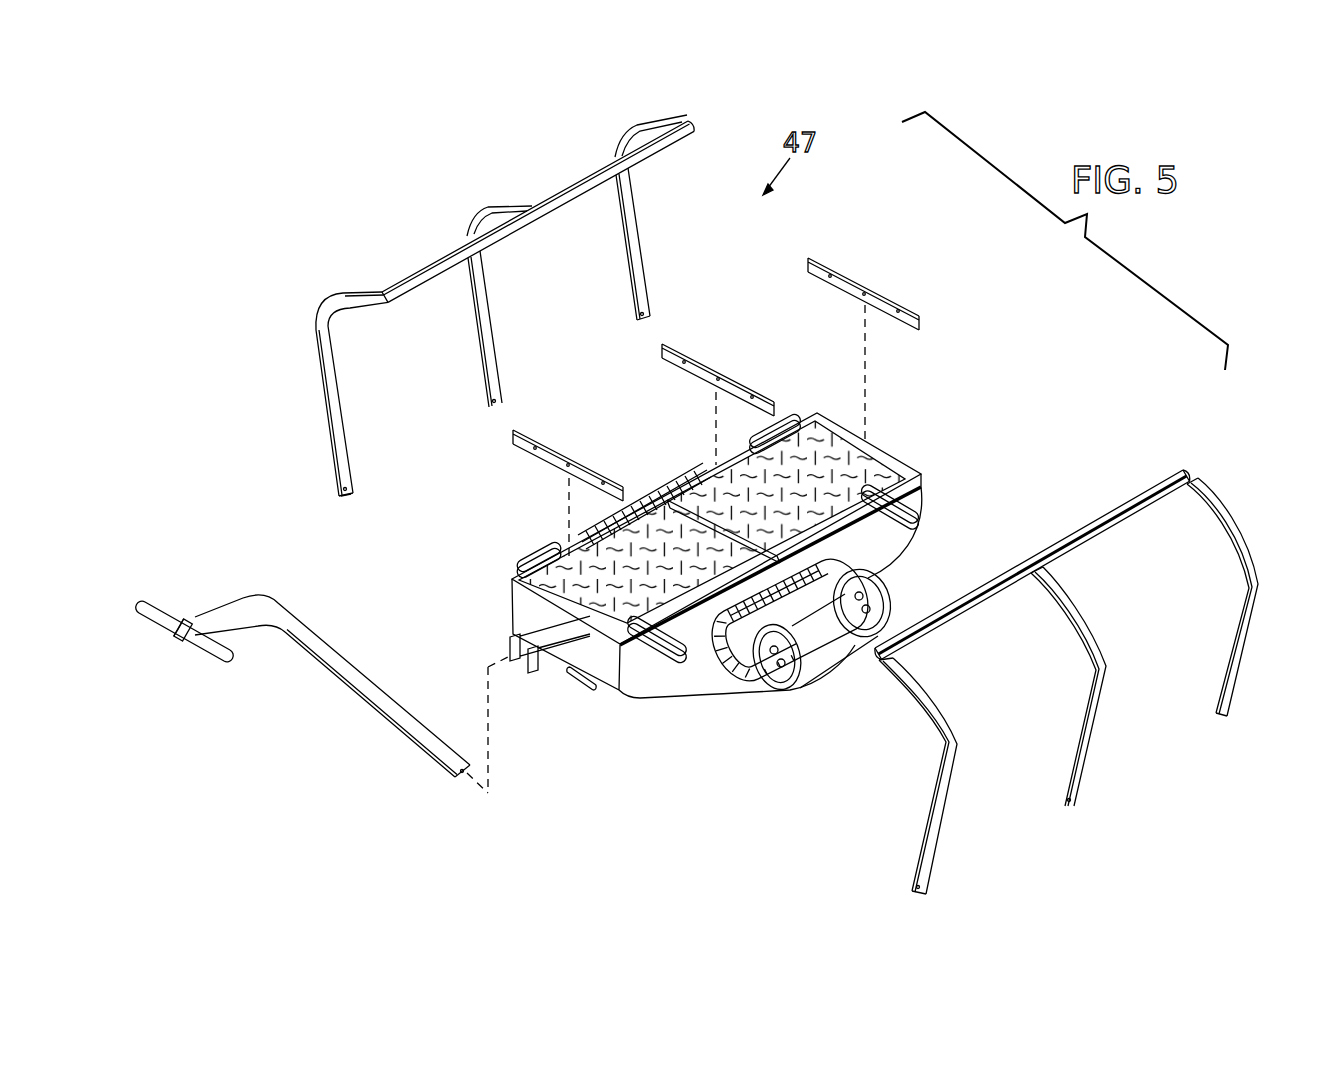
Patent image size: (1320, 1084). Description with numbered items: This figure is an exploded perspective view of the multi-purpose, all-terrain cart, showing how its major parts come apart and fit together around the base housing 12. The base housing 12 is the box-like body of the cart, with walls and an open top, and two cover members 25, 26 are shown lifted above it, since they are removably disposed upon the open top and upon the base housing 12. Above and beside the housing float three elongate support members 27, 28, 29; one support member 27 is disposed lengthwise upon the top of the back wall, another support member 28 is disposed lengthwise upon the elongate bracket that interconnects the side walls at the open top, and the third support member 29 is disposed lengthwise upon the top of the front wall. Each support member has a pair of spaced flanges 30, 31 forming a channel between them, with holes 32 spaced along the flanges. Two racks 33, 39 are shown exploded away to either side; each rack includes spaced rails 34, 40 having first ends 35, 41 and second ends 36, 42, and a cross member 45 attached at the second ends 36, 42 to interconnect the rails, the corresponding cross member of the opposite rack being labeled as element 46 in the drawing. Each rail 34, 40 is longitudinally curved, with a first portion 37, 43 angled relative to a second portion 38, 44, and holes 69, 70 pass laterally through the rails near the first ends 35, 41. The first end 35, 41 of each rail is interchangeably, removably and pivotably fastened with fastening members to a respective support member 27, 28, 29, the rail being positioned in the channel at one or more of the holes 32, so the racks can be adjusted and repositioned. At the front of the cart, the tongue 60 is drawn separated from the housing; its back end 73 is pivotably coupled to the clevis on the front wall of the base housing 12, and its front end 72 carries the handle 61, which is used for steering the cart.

The base housing 12 is at (903, 520).
The cover member 25 is at (517, 573).
The cover member 26 is at (878, 471).
The elongate support member 27 is at (513, 440).
The elongate support member 28 is at (660, 352).
The elongate support member 29 is at (806, 270).
The flange 30 is at (879, 310).
The flange 31 is at (889, 299).
The holes 32 is at (843, 284).
The rack 33 is at (935, 765).
The rail 34 is at (948, 716).
The first end 35 is at (920, 875).
The second end 36 is at (1189, 480).
The first portion 37 is at (935, 815).
The second portion 38 is at (1212, 512).
The rack 39 is at (314, 352).
The rail 40 is at (638, 210).
The first end 41 is at (350, 472).
The second end 42 is at (700, 122).
The first portion 43 is at (646, 283).
The second portion 44 is at (318, 312).
The cross member 45 is at (1050, 543).
The top rail 46 is at (546, 198).
The tongue 60 is at (362, 690).
The handle 61 is at (188, 666).
The hole 69 is at (913, 887).
The hole 70 is at (488, 408).
The front end 72 is at (187, 619).
The back end 73 is at (450, 768).